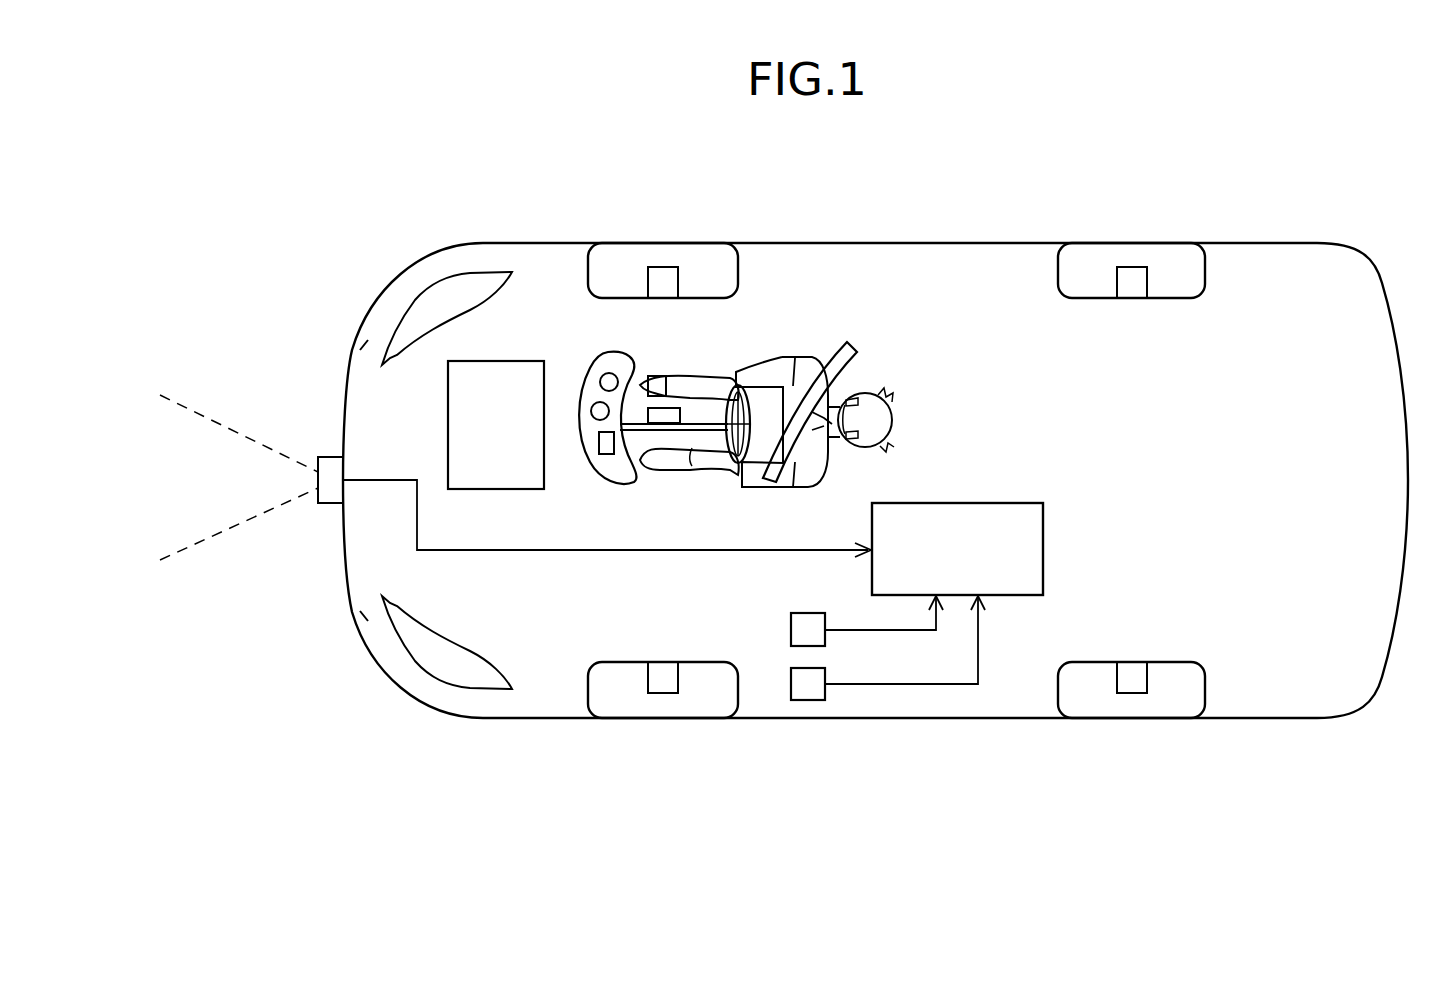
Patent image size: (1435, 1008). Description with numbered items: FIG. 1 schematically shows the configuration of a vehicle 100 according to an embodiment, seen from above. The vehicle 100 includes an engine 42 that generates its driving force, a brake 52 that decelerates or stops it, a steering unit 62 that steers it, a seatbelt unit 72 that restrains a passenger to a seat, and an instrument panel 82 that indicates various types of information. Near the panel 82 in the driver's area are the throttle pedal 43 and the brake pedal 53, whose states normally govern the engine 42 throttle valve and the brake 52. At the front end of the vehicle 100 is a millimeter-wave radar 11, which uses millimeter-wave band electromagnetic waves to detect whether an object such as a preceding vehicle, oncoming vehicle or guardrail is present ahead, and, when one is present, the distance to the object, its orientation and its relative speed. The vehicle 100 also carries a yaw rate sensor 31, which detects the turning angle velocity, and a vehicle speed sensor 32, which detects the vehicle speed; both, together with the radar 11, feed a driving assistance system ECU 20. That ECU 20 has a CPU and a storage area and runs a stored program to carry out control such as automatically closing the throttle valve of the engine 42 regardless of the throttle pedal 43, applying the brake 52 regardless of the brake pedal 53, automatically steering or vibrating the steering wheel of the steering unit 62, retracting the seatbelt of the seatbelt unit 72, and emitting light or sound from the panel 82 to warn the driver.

The vehicle 100 is at (1242, 198).
The brake 52 is at (1131, 275).
The millimeter-wave radar 11 is at (332, 457).
The engine 42 is at (471, 361).
The instrument panel 82 is at (620, 358).
The throttle pedal 43 is at (657, 380).
The brake pedal 53 is at (660, 413).
The steering unit 62 is at (728, 455).
The seatbelt unit 72 is at (847, 346).
The driving assistance system ECU 20 is at (988, 503).
The yaw rate sensor 31 is at (815, 613).
The vehicle speed sensor 32 is at (815, 668).